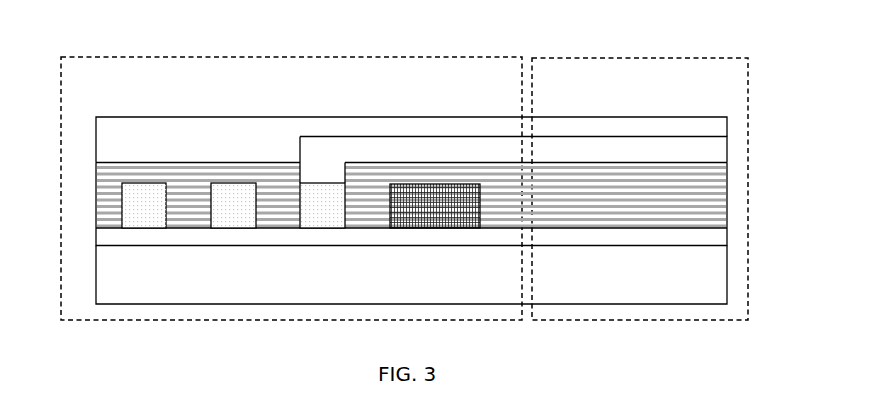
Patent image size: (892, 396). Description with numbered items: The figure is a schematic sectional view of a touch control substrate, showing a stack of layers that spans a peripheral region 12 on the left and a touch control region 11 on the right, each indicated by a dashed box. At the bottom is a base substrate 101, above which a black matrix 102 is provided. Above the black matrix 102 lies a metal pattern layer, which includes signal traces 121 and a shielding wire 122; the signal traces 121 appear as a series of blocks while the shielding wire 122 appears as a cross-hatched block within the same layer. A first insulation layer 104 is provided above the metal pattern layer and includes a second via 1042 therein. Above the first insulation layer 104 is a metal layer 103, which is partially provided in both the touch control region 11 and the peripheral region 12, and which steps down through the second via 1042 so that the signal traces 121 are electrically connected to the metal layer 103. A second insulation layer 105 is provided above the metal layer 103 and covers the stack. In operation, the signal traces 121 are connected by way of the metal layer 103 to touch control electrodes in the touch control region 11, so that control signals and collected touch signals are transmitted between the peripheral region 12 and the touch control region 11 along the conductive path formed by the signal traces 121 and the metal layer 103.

The touch control region 11 is at (562, 57).
The peripheral region 12 is at (113, 56).
The base substrate 101 is at (707, 273).
The black matrix 102 is at (713, 236).
The metal layer 103 is at (692, 154).
The first insulation layer 104 is at (107, 199).
The second insulation layer 105 is at (123, 141).
The signal traces 121 is at (228, 198).
The shielding wire 122 is at (449, 195).
The second via 1042 is at (300, 172).